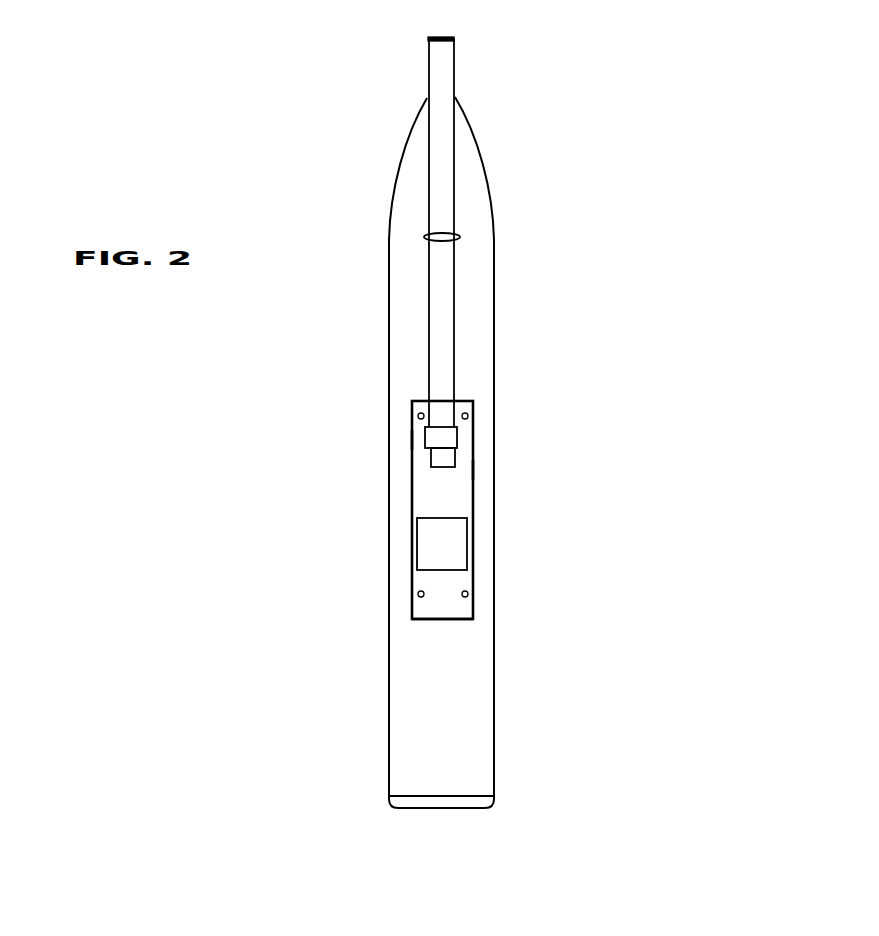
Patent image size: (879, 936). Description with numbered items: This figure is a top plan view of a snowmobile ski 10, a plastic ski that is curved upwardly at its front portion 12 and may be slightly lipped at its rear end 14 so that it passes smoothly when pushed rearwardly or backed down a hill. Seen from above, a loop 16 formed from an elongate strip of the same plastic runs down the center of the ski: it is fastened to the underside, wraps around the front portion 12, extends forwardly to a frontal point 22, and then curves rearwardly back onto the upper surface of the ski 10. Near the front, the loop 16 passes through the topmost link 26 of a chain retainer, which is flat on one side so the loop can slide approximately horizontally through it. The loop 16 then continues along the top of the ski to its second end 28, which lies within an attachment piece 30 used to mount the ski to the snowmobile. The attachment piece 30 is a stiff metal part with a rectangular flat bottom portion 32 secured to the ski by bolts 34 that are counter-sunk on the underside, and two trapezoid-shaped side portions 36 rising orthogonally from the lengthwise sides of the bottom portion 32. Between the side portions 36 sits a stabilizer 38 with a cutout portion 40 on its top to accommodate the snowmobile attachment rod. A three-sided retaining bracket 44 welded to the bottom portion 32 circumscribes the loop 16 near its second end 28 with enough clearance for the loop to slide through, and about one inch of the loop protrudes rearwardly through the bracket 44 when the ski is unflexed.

The snowmobile ski 10 is at (642, 568).
The front portion 12 is at (470, 117).
The rear end 14 is at (408, 807).
The loop 16 is at (443, 195).
The frontal point 22 is at (445, 35).
The topmost link 26 is at (425, 240).
The second end 28 is at (445, 458).
The attachment piece 30 is at (474, 500).
The bottom portion 32 is at (443, 622).
The bolts 34 is at (415, 408).
The side portions 36 is at (412, 440).
The stabilizer 38 is at (467, 562).
The cutout portion 40 is at (452, 532).
The retaining bracket 44 is at (450, 438).